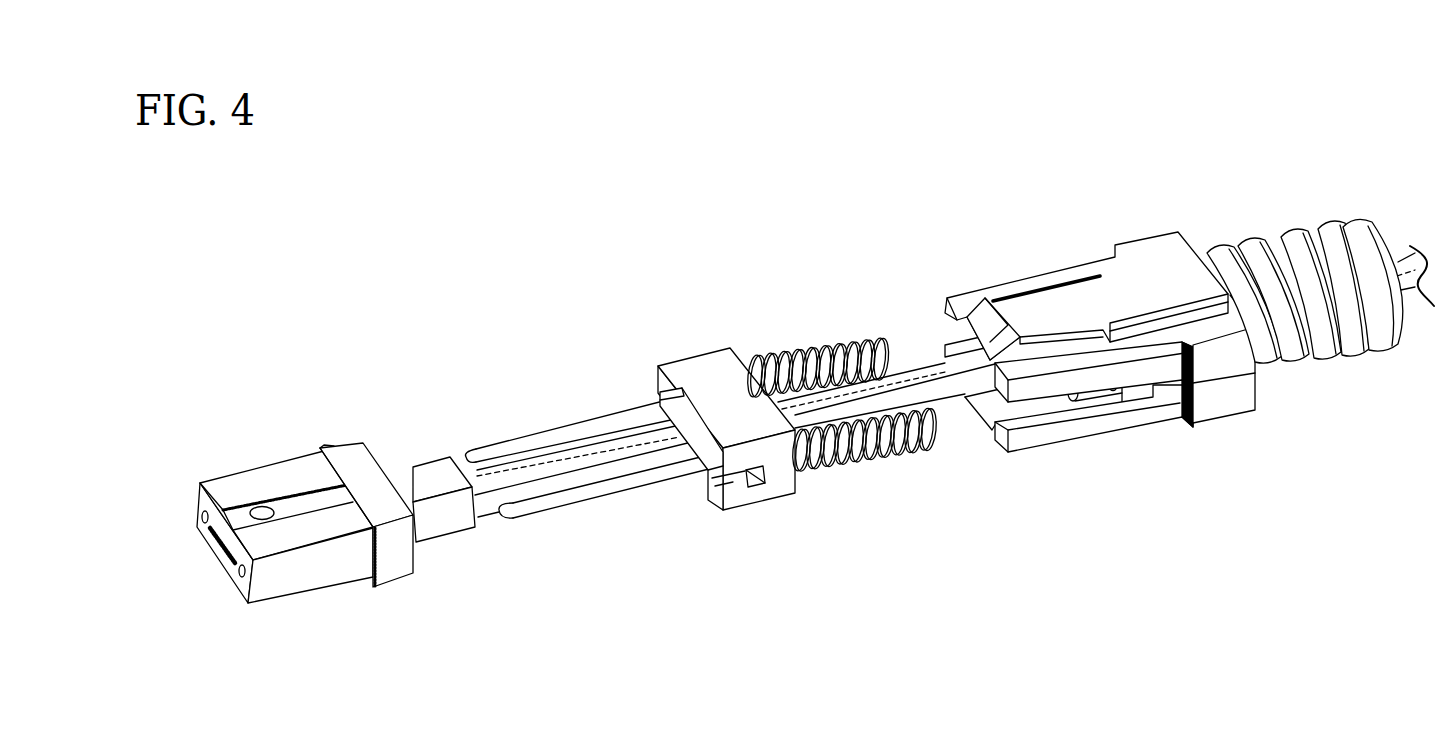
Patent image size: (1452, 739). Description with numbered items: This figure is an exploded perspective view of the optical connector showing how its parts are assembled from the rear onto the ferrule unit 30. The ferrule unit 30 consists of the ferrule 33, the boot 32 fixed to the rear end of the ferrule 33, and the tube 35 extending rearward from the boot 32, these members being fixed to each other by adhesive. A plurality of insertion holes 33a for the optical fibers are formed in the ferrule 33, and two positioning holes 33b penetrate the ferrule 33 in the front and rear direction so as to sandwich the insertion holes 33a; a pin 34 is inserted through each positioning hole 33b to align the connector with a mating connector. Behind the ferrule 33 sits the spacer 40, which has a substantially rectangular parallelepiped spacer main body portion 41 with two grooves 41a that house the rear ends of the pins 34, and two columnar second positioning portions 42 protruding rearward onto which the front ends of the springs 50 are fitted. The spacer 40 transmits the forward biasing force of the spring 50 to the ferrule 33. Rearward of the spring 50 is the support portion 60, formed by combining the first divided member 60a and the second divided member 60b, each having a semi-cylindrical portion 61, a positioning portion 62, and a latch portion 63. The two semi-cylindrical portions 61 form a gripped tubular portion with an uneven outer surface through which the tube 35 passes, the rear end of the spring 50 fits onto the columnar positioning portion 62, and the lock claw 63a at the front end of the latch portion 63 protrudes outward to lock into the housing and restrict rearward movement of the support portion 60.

The ferrule unit 30 is at (255, 460).
The boot 32 is at (425, 477).
The ferrule 33 is at (323, 572).
The insertion holes 33a is at (220, 515).
The positioning holes 33b is at (240, 572).
The pin 34 is at (595, 494).
The tube 35 is at (1397, 262).
The spacer 40 is at (683, 348).
The spacer main body portion 41 is at (782, 489).
The grooves 41a is at (752, 498).
The second positioning portions 42 is at (830, 452).
The spring 50 is at (907, 452).
The support portion 60 is at (1293, 116).
The first divided member 60a is at (1172, 220).
The second divided member 60b is at (1273, 388).
The semi-cylindrical portion 61 is at (1322, 250).
The positioning portion 62 is at (1097, 396).
The latch portion 63 is at (1048, 312).
The lock claw 63a is at (993, 300).